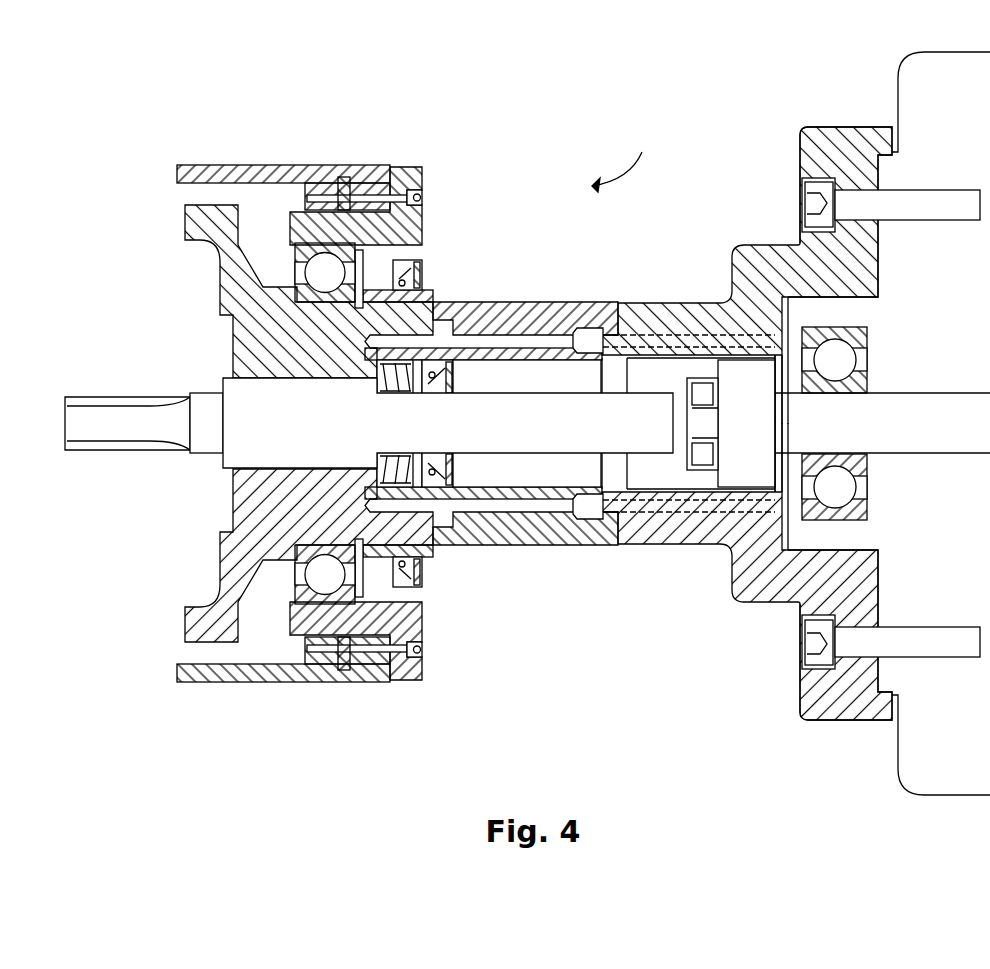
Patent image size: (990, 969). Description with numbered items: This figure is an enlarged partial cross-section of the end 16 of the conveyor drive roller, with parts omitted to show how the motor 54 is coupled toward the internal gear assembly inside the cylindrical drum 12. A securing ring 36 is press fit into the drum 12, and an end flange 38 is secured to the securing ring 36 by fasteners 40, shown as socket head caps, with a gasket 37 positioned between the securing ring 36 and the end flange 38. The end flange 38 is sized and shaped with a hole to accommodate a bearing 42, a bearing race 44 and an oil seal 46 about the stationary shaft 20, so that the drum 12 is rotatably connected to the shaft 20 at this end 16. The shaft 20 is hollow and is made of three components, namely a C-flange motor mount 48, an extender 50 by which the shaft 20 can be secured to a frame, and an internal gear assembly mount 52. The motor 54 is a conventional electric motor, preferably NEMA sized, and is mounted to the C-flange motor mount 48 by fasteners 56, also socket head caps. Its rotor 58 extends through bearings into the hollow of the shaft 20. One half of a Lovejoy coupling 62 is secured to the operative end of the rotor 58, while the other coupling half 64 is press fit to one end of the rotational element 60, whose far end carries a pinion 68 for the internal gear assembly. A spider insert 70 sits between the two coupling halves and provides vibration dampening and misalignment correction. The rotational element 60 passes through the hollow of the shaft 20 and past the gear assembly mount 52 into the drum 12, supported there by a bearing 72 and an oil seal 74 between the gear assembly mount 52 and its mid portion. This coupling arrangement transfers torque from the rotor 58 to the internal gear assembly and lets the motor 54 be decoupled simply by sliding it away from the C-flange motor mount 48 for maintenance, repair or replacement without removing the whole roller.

The cylindrical drum 12 is at (226, 164).
The end 16 is at (623, 157).
The stationary shaft 20 is at (652, 300).
The securing ring 36 is at (322, 184).
The gasket 37 is at (346, 176).
The end flange 38 is at (424, 222).
The fasteners 40 is at (422, 196).
The bearing 42 is at (292, 250).
The bearing race 44 is at (436, 296).
The oil seal 46 is at (424, 268).
The C-flange motor mount 48 is at (850, 130).
The extender 50 is at (596, 547).
The internal gear assembly mount 52 is at (187, 222).
The motor 54 is at (940, 800).
The fasteners 56 is at (806, 196).
The rotor 58 is at (928, 406).
The rotational element 60 is at (525, 410).
The Lovejoy coupling half 62 is at (740, 474).
The Lovejoy coupling half 64 is at (660, 472).
The pinion 68 is at (110, 456).
The spider insert 70 is at (706, 452).
The bearing 72 is at (457, 470).
The oil seal 74 is at (545, 503).